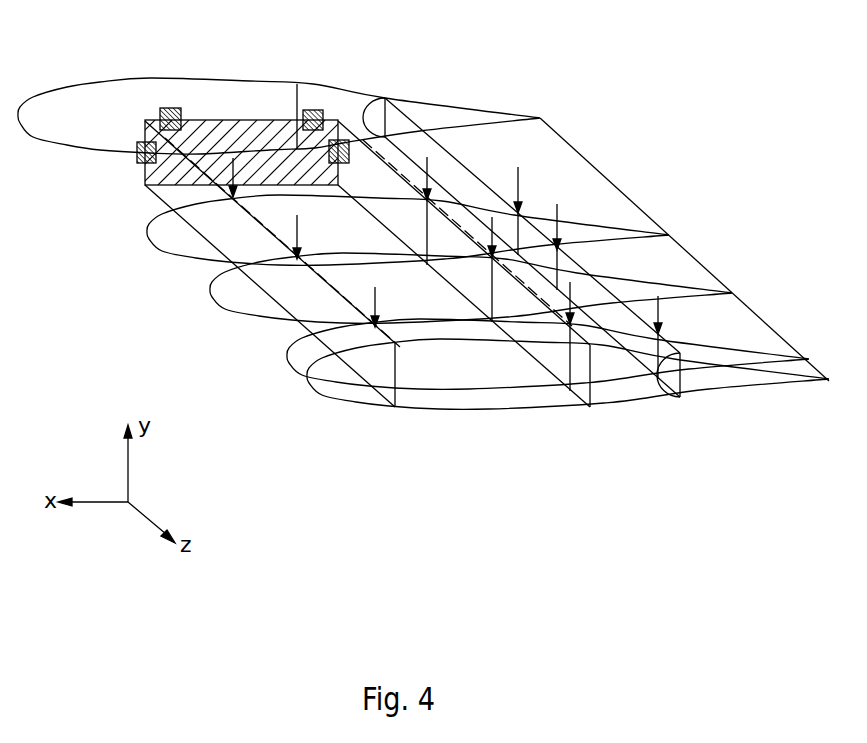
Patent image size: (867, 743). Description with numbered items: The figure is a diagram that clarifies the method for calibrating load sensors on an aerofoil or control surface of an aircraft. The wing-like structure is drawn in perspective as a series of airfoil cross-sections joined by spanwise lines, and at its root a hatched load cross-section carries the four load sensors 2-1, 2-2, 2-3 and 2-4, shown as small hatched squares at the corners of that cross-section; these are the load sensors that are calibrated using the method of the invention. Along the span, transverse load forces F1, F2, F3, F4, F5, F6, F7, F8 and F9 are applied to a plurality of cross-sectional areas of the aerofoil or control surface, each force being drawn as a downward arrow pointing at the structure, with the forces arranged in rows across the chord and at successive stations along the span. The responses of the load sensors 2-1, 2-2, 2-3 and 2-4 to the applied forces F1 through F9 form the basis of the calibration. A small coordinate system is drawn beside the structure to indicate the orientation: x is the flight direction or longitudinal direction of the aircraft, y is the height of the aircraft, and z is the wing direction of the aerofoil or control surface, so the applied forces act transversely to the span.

The load sensor 2-1 is at (142, 164).
The load sensor 2-2 is at (171, 108).
The load sensor 2-3 is at (313, 110).
The load sensor 2-4 is at (349, 142).
The transverse load force F1 is at (245, 175).
The transverse load force F2 is at (439, 175).
The transverse load force F3 is at (530, 187).
The transverse load force F4 is at (309, 235).
The transverse load force F5 is at (483, 234).
The transverse load force F6 is at (569, 222).
The transverse load force F7 is at (387, 304).
The transverse load force F8 is at (582, 300).
The transverse load force F9 is at (671, 310).